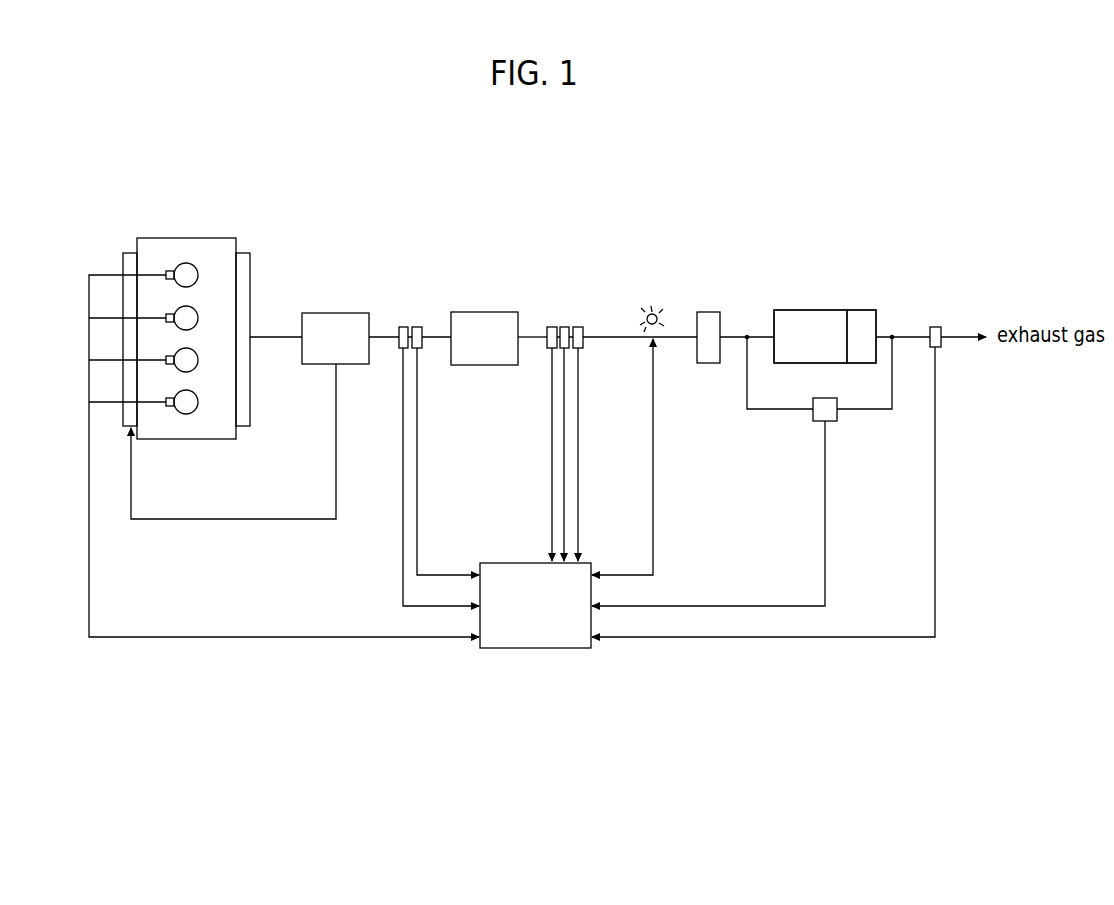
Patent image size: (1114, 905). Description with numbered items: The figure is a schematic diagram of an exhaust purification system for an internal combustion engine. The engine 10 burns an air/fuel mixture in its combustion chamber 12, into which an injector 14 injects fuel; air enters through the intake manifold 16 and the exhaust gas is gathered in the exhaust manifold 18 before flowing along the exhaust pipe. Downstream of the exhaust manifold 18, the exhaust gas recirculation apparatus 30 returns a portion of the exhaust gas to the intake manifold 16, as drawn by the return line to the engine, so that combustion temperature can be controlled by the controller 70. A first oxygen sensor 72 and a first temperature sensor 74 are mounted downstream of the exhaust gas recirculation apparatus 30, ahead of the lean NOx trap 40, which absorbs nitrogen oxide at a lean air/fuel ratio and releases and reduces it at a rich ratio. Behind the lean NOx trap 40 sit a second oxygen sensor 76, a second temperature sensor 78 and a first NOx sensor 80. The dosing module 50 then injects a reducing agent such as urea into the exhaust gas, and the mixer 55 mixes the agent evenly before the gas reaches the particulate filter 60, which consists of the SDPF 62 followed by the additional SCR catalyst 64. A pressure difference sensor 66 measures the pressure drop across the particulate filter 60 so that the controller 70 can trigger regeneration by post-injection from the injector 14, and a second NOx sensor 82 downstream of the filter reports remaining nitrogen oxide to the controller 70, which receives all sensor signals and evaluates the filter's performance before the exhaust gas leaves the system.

The engine 10 is at (216, 228).
The combustion chamber 12 is at (185, 262).
The injector 14 is at (168, 270).
The intake manifold 16 is at (129, 252).
The exhaust manifold 18 is at (243, 252).
The exhaust gas recirculation apparatus 30 is at (336, 312).
The lean NOx trap 40 is at (485, 311).
The dosing module 50 is at (656, 312).
The mixer 55 is at (710, 311).
The particulate filter 60 is at (785, 280).
The SDPF 62 is at (810, 309).
The additional SCR catalyst 64 is at (860, 309).
The pressure difference sensor 66 is at (838, 421).
The controller 70 is at (535, 649).
The first oxygen sensor 72 is at (403, 326).
The first temperature sensor 74 is at (417, 326).
The second oxygen sensor 76 is at (551, 326).
The second temperature sensor 78 is at (563, 326).
The first NOx sensor 80 is at (578, 326).
The second NOx sensor 82 is at (935, 326).